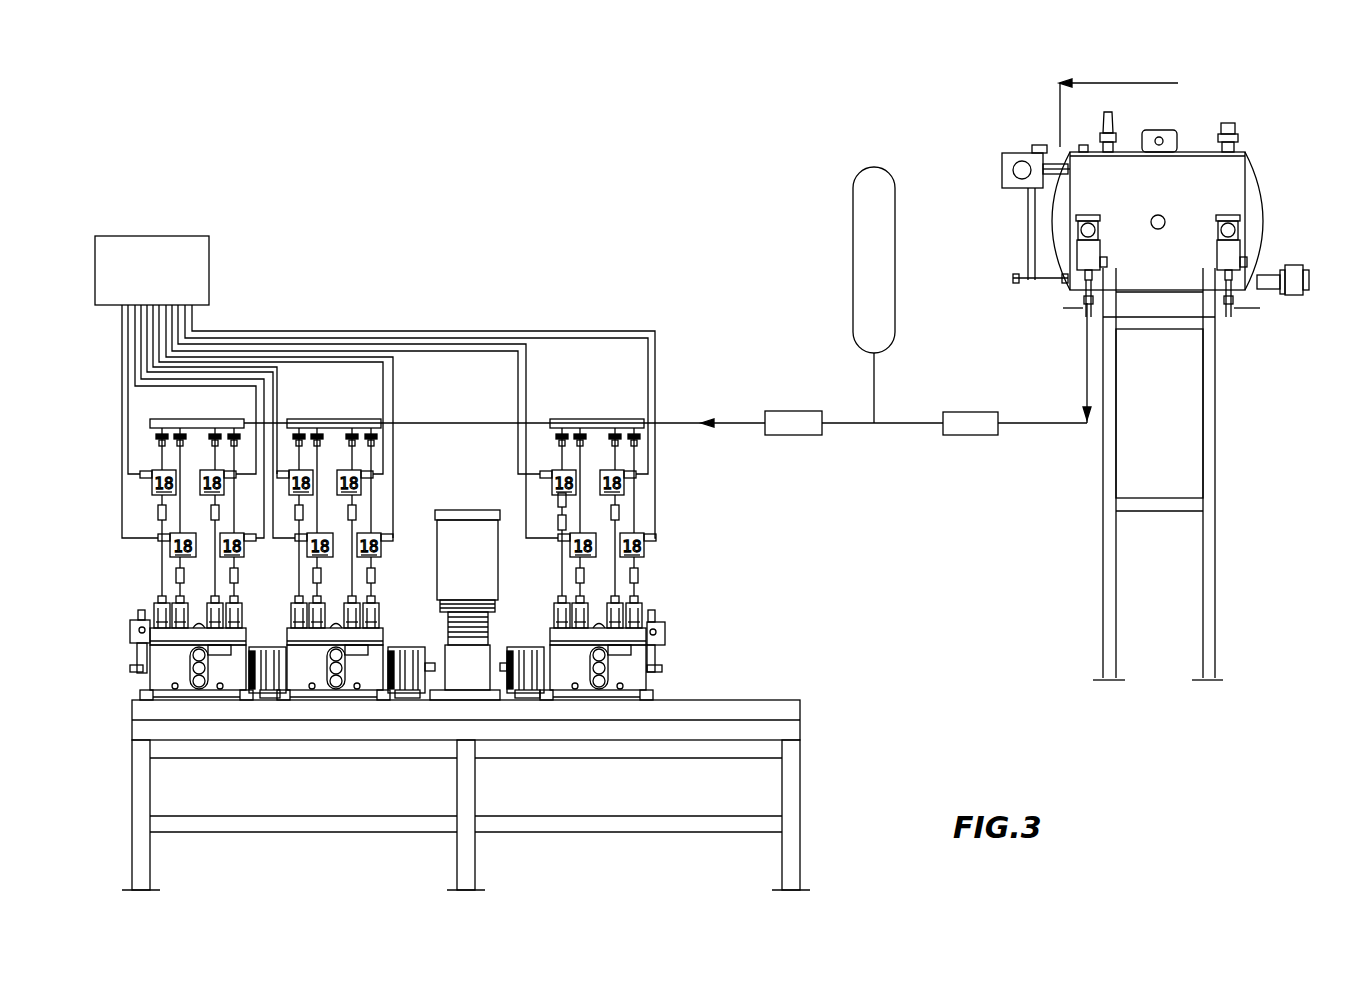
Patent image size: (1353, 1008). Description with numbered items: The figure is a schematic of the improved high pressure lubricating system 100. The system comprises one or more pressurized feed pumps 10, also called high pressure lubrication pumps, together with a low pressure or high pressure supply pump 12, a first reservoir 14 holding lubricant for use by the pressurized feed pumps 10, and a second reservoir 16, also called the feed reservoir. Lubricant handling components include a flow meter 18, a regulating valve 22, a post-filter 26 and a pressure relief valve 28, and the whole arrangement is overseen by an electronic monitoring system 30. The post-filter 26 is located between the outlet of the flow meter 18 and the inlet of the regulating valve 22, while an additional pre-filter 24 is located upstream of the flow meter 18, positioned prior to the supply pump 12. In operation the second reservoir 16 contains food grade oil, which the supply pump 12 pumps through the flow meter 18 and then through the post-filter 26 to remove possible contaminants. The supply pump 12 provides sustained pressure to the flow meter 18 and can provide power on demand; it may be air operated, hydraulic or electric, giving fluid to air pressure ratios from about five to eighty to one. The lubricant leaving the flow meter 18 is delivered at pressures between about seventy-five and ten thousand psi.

The lubricating system 100 is at (393, 196).
The electronic monitoring system 30 is at (139, 285).
The pressurized feed pump 10 is at (653, 603).
The first reservoir 14 is at (662, 668).
The flow meter 18 is at (398, 513).
The regulating valve 22 is at (158, 512).
The post-filter 26 is at (548, 500).
The pre-filter 24 is at (791, 406).
The pressure relief valve 28 is at (853, 169).
The supply pump 12 is at (987, 441).
The second reservoir 16 is at (1262, 182).